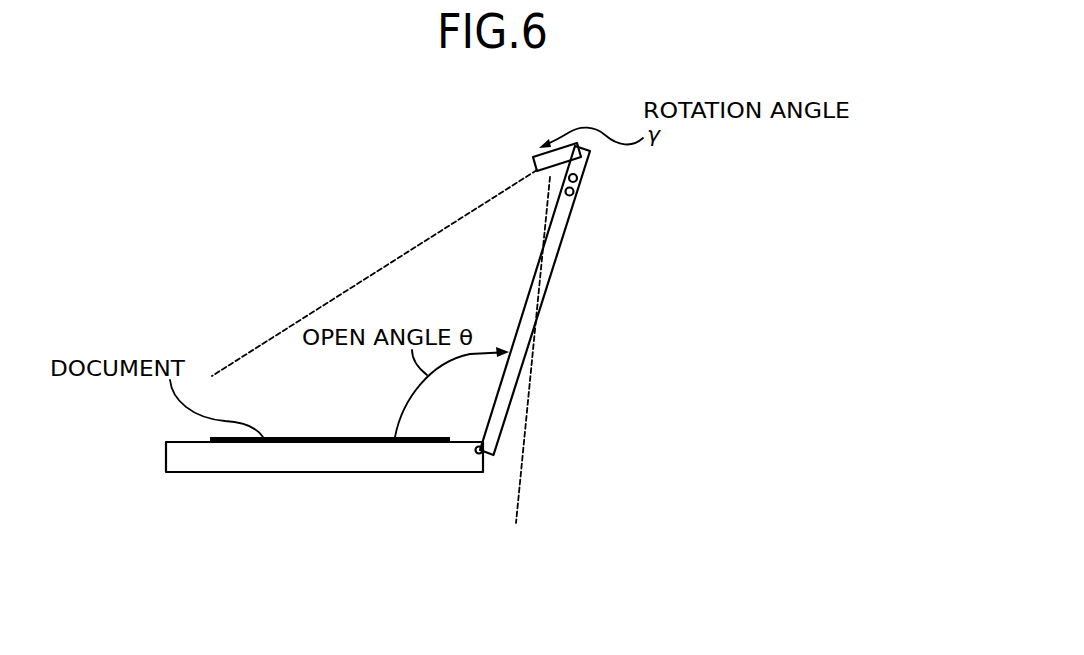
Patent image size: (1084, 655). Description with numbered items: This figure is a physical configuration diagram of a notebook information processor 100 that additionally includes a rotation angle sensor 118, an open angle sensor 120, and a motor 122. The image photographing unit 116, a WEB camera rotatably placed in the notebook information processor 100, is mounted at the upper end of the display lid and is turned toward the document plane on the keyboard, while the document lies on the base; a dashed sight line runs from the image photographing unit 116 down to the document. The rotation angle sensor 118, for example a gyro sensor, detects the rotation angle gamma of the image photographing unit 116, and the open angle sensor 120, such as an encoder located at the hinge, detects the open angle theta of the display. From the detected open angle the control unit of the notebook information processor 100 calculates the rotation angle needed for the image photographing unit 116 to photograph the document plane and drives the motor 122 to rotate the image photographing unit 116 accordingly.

The image photographing unit 116 is at (532, 158).
The motor 122 is at (577, 178).
The rotation angle sensor 118 is at (574, 193).
The notebook information processor 100 is at (297, 472).
The open angle sensor 120 is at (481, 454).